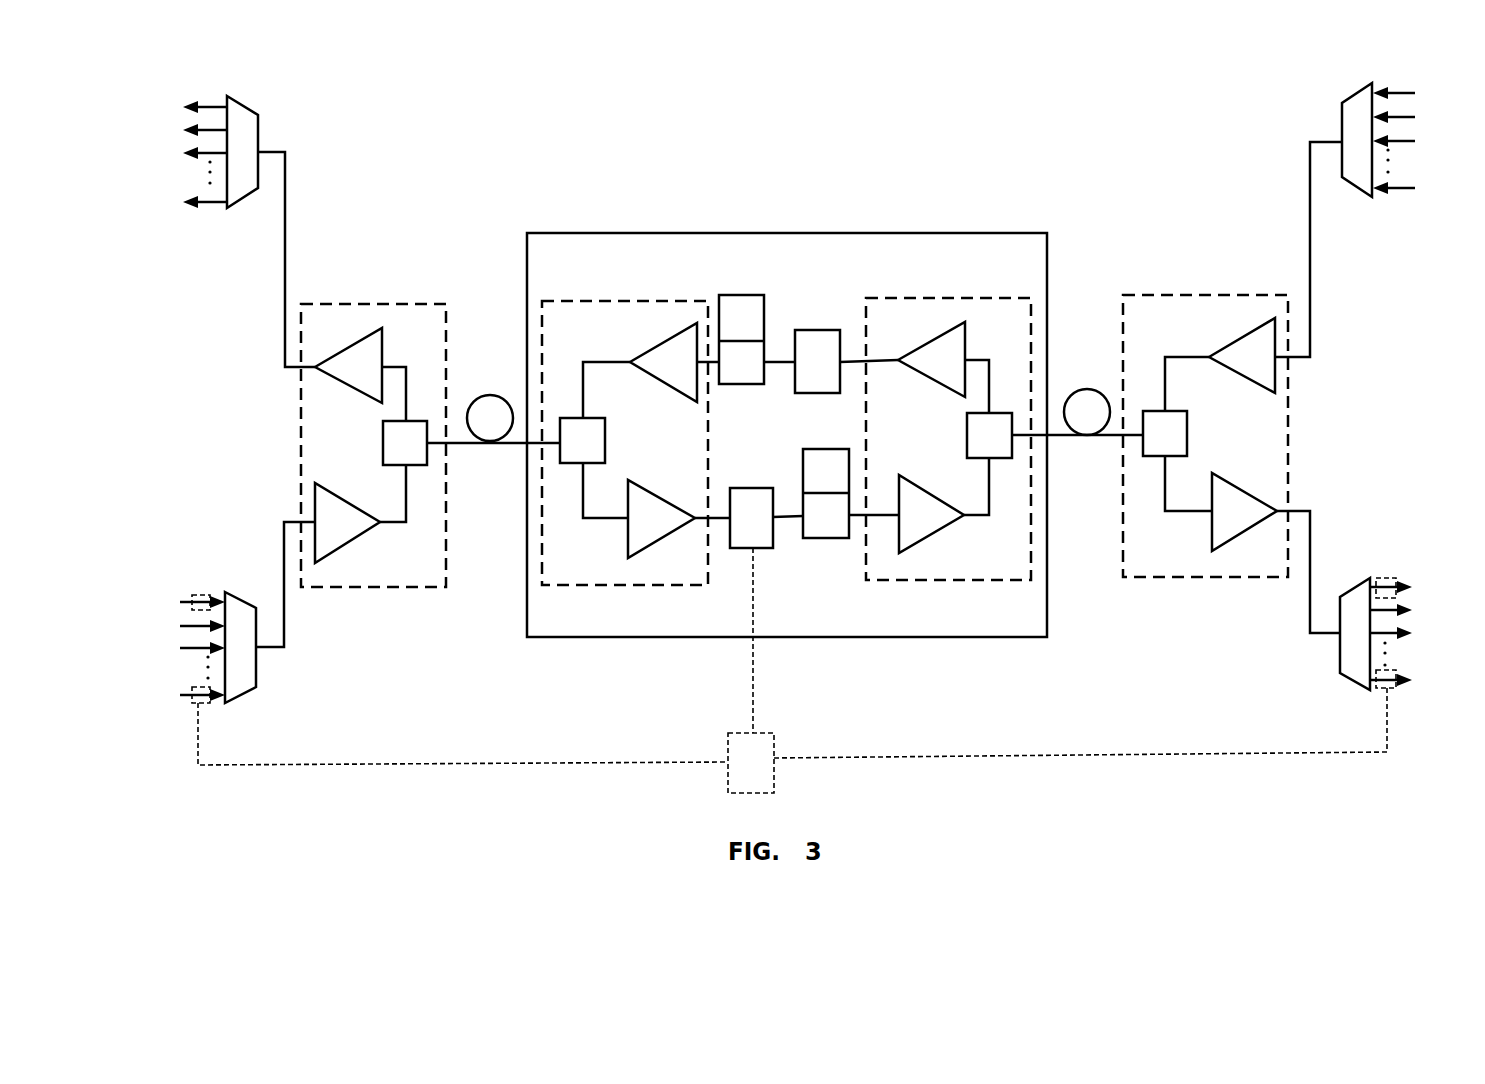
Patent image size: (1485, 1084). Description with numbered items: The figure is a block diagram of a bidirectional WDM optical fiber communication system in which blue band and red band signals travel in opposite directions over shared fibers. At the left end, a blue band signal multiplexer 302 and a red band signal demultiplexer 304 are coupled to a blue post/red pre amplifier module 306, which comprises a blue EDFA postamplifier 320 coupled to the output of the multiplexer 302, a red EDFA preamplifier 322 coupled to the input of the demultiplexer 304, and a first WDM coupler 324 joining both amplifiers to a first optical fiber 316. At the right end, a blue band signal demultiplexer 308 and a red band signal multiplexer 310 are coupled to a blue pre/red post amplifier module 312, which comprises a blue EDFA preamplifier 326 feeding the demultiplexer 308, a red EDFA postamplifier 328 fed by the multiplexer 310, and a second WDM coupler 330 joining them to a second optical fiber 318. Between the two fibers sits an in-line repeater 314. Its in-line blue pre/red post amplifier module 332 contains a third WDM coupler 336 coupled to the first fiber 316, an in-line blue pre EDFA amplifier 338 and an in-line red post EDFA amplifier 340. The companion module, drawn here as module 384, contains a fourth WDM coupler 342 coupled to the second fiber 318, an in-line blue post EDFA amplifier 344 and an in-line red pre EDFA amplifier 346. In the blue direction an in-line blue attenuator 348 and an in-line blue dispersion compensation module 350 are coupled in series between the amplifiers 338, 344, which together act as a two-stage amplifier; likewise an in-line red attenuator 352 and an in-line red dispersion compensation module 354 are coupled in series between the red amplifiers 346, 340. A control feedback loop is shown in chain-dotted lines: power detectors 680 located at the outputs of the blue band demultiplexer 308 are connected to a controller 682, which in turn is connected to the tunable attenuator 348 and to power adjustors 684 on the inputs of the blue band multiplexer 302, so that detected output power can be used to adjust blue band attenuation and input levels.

The blue band signal multiplexer 302 is at (234, 703).
The red band signal demultiplexer 304 is at (232, 208).
The blue post/red pre amplifier module 306 is at (435, 332).
The blue band signal demultiplexer 308 is at (1352, 690).
The red band signal multiplexer 310 is at (1362, 198).
The blue pre/red post amplifier module 312 is at (1169, 324).
The in-line repeater 314 is at (1030, 261).
The first optical fiber 316 is at (488, 394).
The second optical fiber 318 is at (1086, 390).
The blue EDFA postamplifier 320 is at (362, 532).
The red EDFA preamplifier 322 is at (377, 377).
The first WDM coupler 324 is at (423, 454).
The blue EDFA preamplifier 326 is at (1255, 522).
The red EDFA postamplifier 328 is at (1269, 368).
The second WDM coupler 330 is at (1183, 445).
The in-line blue pre/red post amplifier module 332 is at (587, 334).
The third WDM coupler 336 is at (600, 452).
The in-line blue pre EDFA amplifier 338 is at (671, 529).
The in-line red post EDFA amplifier 340 is at (690, 373).
The fourth WDM coupler 342 is at (1007, 447).
The in-line blue post EDFA amplifier 344 is at (940, 526).
The in-line red pre EDFA amplifier 346 is at (958, 370).
The in-line blue attenuator 348 is at (769, 544).
The in-line blue Dispersion Compensation Module 350 is at (843, 531).
The in-line red attenuator 352 is at (835, 384).
The in-line red Dispersion Compensation Module 354 is at (759, 373).
The bidirectional amplifier stage 384 is at (1021, 324).
The power detectors 680 is at (1392, 577).
The controller 682 is at (769, 777).
The power adjustors 684 is at (202, 594).